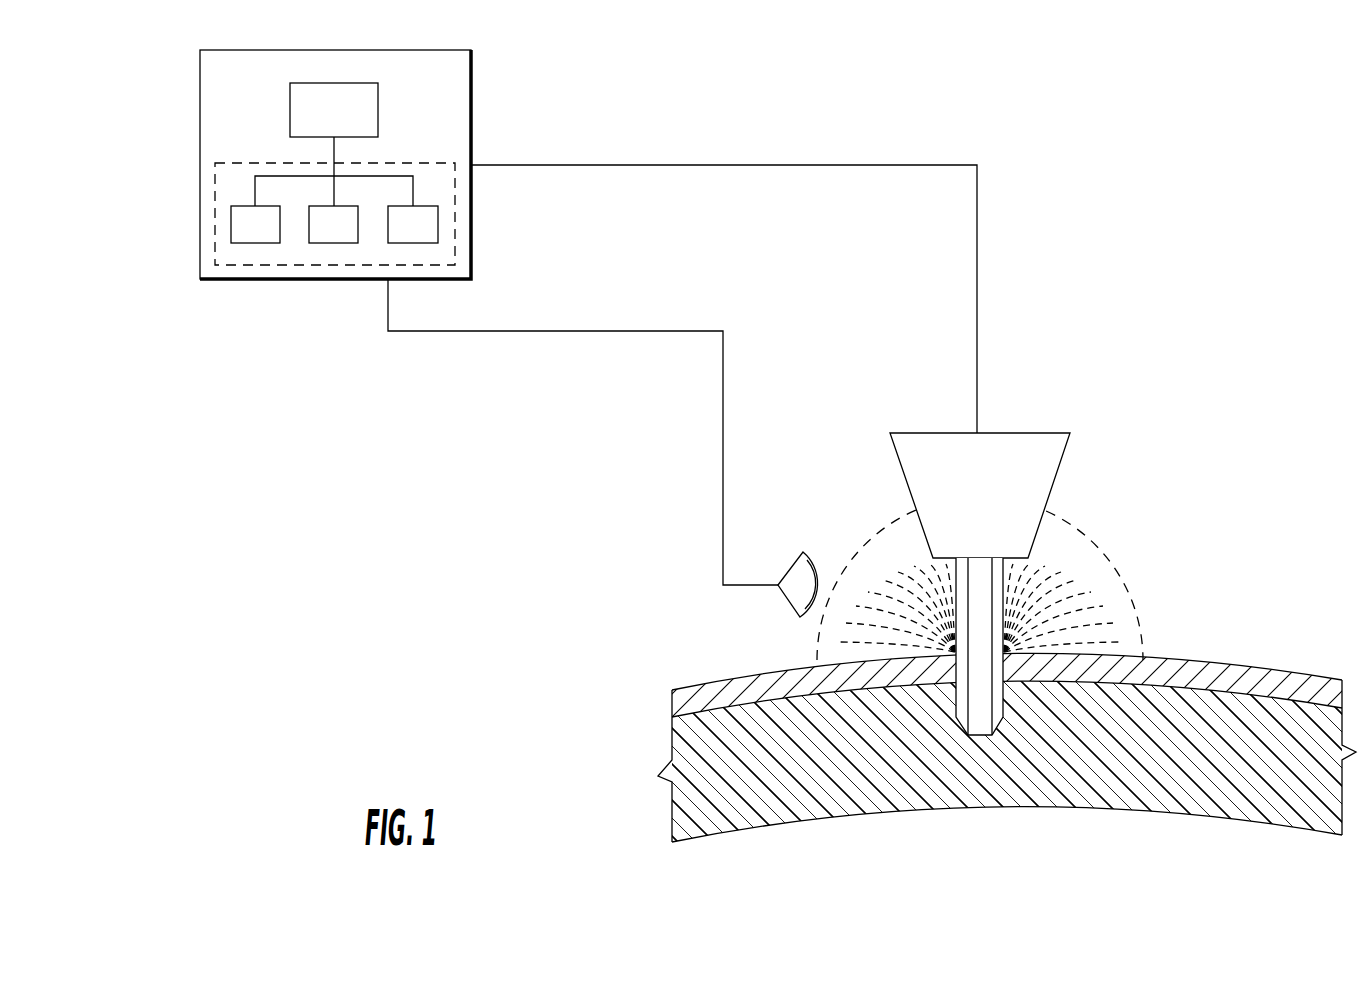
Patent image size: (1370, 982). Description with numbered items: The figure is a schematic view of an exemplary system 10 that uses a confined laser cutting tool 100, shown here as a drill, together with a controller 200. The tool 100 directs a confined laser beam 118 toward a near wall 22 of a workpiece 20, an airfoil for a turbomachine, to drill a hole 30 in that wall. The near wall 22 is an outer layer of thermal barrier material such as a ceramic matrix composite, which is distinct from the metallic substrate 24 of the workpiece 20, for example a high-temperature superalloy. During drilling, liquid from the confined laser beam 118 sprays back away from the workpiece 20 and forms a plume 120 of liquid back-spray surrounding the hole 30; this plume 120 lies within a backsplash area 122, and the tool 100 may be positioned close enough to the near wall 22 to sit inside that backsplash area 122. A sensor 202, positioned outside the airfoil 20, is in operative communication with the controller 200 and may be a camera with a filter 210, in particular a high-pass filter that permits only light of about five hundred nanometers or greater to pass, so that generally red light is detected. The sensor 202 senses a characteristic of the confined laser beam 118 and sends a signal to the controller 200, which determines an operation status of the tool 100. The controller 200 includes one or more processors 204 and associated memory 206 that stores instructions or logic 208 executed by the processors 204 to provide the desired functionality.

The system 10 is at (1211, 156).
The workpiece 20 is at (590, 750).
The near wall 22 is at (1290, 674).
The substrate 24 is at (1193, 722).
The hole 30 is at (1014, 730).
The confined laser cutting tool 100 is at (1032, 433).
The confined laser beam 118 is at (975, 605).
The plume 120 is at (1088, 586).
The backsplash area 122 is at (1080, 518).
The controller 200 is at (266, 50).
The sensor 202 is at (790, 568).
The processor 204 is at (337, 100).
The memory 206 is at (215, 213).
The instructions or logic 208 is at (255, 235).
The filter 210 is at (800, 612).